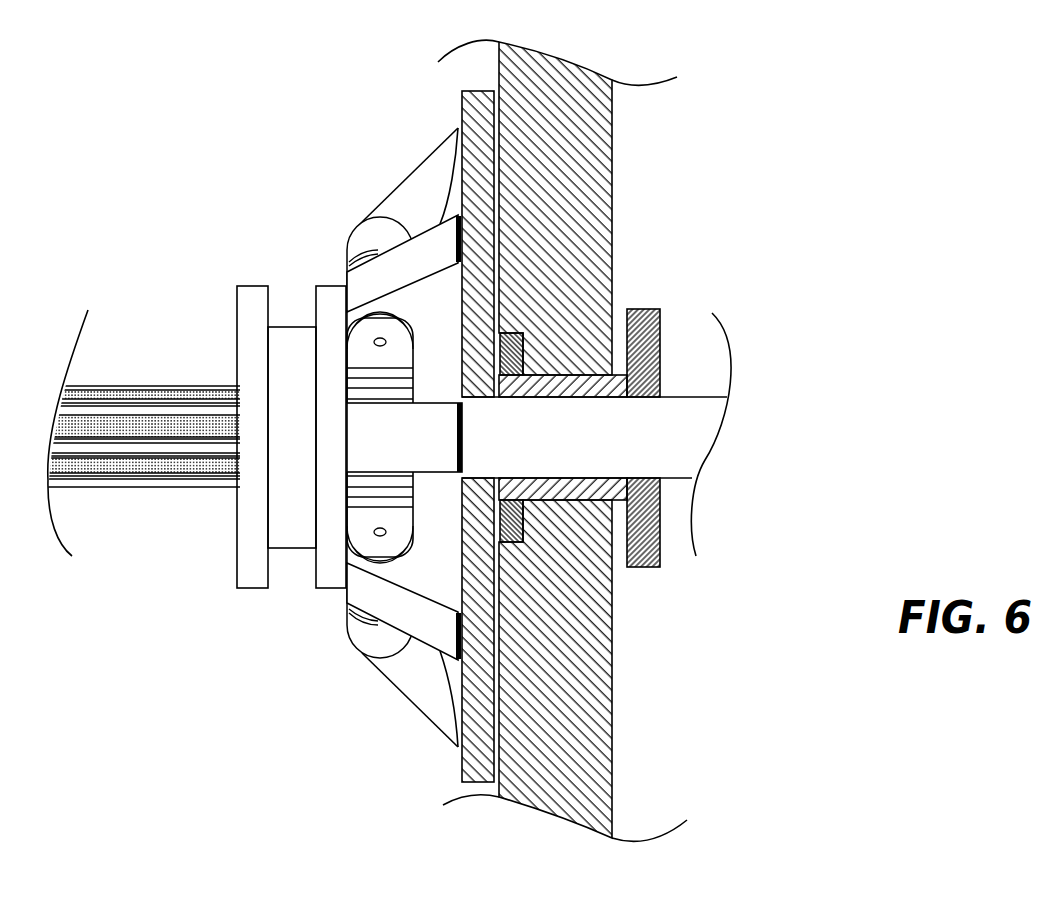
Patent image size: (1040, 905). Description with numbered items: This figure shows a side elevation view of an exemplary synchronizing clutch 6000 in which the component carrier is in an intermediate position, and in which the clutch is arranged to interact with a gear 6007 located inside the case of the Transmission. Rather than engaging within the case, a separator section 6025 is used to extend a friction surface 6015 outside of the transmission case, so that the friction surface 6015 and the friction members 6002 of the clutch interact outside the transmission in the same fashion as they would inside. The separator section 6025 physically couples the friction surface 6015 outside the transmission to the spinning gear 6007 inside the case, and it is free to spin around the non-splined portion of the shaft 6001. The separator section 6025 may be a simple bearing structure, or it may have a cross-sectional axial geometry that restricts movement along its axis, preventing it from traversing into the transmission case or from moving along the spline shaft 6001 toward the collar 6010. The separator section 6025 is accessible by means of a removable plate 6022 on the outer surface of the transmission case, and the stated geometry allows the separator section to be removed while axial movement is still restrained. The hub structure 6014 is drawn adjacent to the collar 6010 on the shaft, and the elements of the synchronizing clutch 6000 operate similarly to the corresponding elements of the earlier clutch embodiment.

The synchronizing clutch 6000 is at (128, 100).
The shaft 6001 is at (687, 436).
The friction members 6002 is at (414, 203).
The gear 6007 is at (645, 569).
The collar 6010 is at (378, 359).
The hub flange 6014 is at (292, 550).
The friction surface 6015 is at (462, 103).
The removable plate 6022 is at (518, 333).
The separator section 6025 is at (562, 373).
The transmission Transmission is at (563, 728).